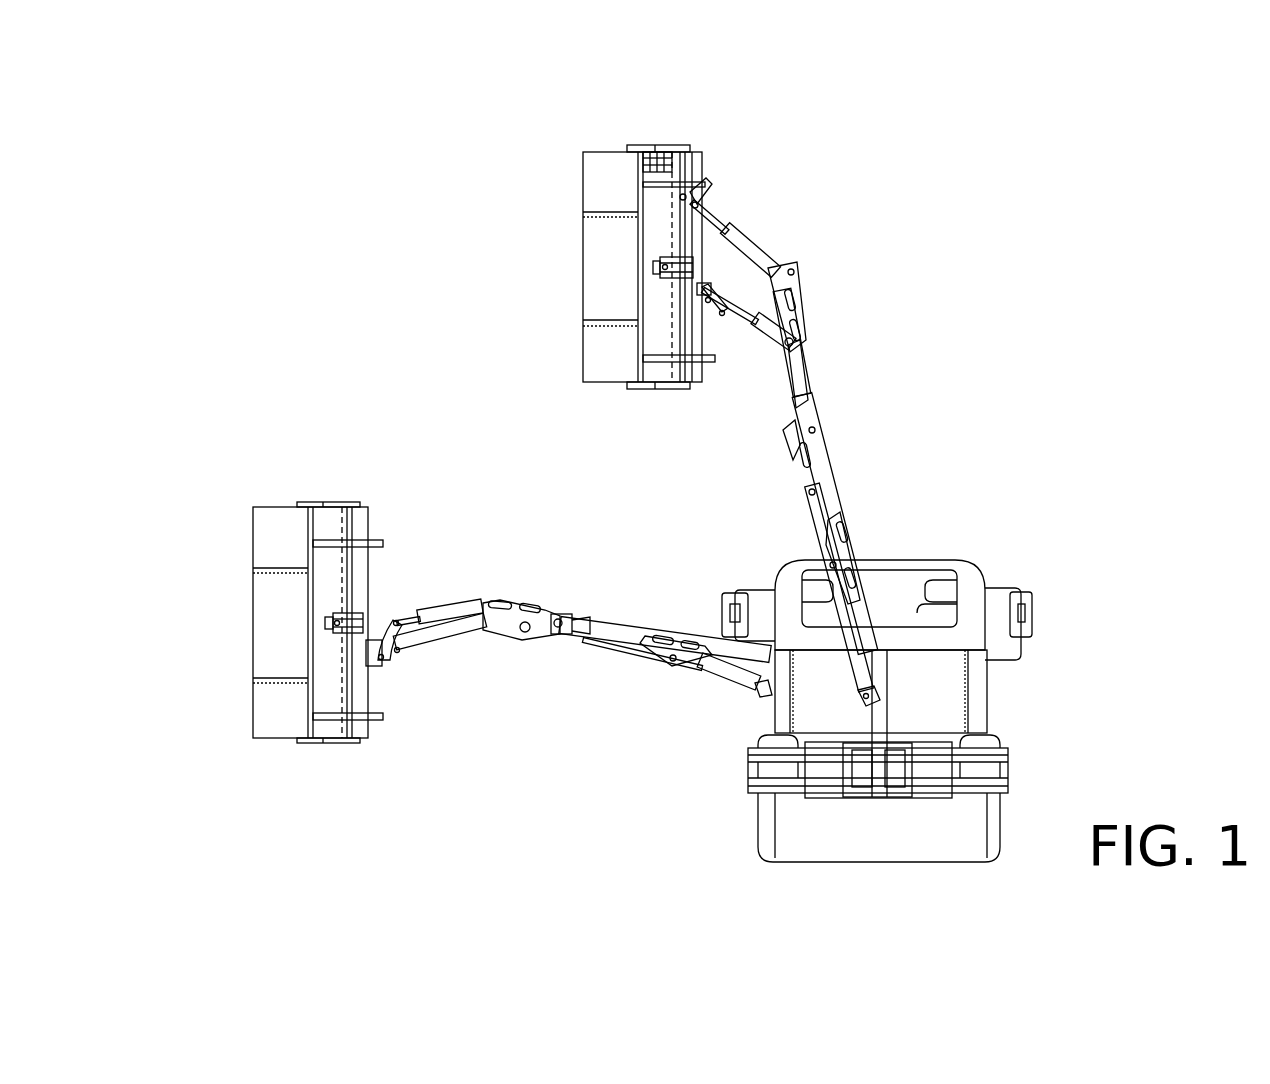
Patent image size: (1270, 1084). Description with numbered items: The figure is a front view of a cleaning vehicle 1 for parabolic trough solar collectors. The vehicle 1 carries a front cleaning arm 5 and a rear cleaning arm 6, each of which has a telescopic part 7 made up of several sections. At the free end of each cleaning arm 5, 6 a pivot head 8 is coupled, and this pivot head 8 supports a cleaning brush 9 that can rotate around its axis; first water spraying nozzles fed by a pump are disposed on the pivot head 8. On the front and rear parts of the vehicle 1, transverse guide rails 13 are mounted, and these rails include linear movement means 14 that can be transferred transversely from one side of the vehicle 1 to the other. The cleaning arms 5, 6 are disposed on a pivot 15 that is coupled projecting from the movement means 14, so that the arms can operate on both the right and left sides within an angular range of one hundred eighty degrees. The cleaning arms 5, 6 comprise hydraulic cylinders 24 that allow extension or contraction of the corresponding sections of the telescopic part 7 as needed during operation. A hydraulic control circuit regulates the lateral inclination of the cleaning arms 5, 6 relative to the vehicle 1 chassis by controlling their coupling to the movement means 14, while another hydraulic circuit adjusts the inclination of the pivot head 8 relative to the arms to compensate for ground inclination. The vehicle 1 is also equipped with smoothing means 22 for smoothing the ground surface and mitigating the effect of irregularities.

The cleaning vehicle 1 is at (1042, 737).
The front cleaning arm 5 is at (790, 284).
The rear cleaning arm 6 is at (546, 646).
The telescopic part 7 is at (810, 390).
The pivot head 8 is at (372, 690).
The cleaning brush 9 is at (253, 530).
The transverse guide rail 13 is at (753, 786).
The linear movement means 14 is at (853, 792).
The pivot 15 is at (882, 773).
The smoothing means 22 is at (800, 838).
The hydraulic cylinder 24 is at (745, 240).